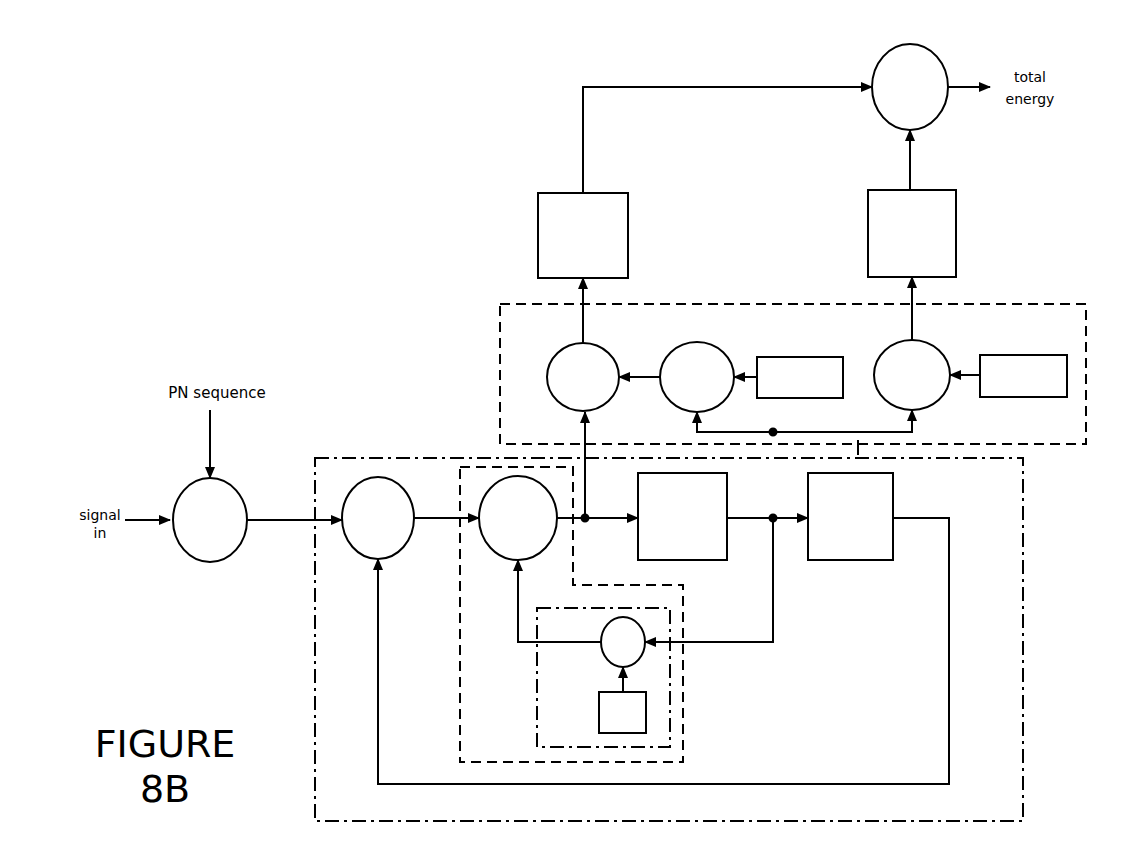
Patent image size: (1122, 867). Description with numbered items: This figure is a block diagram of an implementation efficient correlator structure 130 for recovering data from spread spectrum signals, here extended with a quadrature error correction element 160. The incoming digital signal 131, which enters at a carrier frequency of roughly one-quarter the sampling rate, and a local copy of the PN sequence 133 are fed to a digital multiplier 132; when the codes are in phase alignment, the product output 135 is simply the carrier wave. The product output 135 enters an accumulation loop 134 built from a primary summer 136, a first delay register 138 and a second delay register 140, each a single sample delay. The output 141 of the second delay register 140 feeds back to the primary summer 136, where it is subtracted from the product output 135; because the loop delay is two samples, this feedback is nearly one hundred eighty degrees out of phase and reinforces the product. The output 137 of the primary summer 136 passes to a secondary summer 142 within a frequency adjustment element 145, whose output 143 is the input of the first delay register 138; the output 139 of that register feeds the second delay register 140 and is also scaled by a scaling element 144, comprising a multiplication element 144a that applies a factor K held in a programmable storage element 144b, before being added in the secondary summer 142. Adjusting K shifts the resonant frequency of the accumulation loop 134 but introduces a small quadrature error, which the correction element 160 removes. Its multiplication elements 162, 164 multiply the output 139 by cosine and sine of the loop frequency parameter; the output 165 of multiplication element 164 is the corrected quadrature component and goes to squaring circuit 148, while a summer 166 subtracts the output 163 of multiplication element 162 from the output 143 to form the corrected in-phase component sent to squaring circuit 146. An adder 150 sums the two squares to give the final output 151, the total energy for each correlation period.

The implementation efficient correlator structure 130 is at (316, 290).
The incoming digital signal 131 is at (142, 515).
The digital multiplier 132 is at (207, 561).
The PN sequence 133 is at (210, 443).
The accumulation loop 134 is at (669, 639).
The product output 135 is at (276, 522).
The primary summer 136 is at (403, 549).
The output of the primary summer 137 is at (433, 516).
The first delay register 138 is at (712, 561).
The output of the first delay register 139 is at (752, 520).
The second delay register 140 is at (843, 561).
The output of the second delay register 141 is at (920, 517).
The secondary summer 142 is at (534, 550).
The output of the secondary summer 143 is at (614, 521).
The scaling element 144 is at (603, 677).
The multiplication element 144a is at (603, 639).
The programmable storage element 144b is at (602, 692).
The frequency adjustment element 145 is at (571, 614).
The squaring circuit 146 is at (538, 214).
The squaring circuit 148 is at (868, 210).
The adder 150 is at (935, 51).
The final output 151 is at (970, 89).
The quadrature error correction element 160 is at (793, 374).
The multiplication element 162 is at (725, 353).
The output of multiplication element 163 is at (583, 326).
The multiplication element 164 is at (940, 353).
The output of multiplication element 165 is at (911, 325).
The summer 166 is at (606, 350).